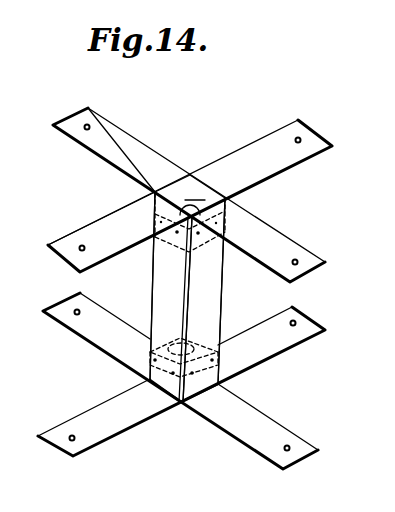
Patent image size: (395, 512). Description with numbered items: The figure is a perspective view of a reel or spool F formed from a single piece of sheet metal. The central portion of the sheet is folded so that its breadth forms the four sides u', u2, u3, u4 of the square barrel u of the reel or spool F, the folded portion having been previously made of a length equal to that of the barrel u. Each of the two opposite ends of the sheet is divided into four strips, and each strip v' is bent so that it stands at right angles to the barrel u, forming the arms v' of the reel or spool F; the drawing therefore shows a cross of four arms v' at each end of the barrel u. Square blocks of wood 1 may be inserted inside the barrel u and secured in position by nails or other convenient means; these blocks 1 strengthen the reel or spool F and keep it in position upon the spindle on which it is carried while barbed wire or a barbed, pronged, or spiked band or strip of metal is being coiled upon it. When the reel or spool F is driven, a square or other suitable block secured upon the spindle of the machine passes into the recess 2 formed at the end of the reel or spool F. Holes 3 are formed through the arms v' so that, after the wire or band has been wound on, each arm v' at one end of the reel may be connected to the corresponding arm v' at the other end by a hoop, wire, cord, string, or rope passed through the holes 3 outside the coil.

The square block of wood 1 is at (227, 196).
The recess 2 is at (177, 190).
The hole 3 is at (90, 124).
The barrel u is at (187, 297).
The side of the barrel u' is at (161, 286).
The side of the barrel u2 is at (154, 191).
The side of the barrel u3 is at (200, 188).
The side of the barrel u4 is at (209, 291).
The arm v' is at (185, 288).
The reel or spool F is at (212, 309).